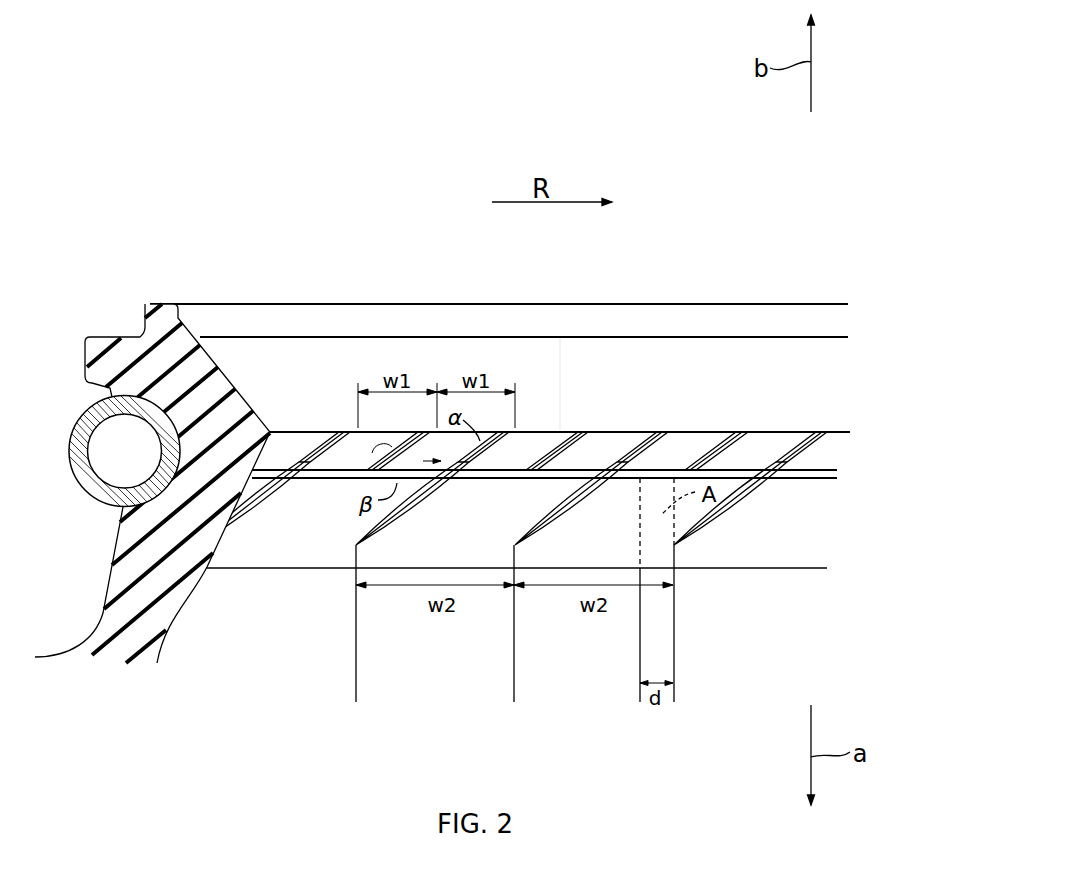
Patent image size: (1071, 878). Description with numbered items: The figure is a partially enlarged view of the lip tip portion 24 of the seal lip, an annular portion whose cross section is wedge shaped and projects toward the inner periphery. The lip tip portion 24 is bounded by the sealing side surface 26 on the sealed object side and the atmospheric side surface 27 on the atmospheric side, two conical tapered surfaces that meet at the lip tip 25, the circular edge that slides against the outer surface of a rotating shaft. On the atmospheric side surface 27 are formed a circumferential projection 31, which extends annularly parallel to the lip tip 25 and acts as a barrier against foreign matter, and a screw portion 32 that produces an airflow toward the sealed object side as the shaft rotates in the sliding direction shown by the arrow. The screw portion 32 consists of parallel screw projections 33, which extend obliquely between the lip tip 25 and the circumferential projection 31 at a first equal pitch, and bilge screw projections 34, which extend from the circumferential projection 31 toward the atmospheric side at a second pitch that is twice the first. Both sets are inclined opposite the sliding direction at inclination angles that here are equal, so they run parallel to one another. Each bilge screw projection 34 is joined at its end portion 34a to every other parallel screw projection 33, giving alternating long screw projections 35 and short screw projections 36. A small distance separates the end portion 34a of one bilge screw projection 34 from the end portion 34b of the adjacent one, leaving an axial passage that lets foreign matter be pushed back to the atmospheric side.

The lip tip portion 24 is at (553, 360).
The lip tip 25 is at (310, 430).
The sealing side surface 26 is at (415, 358).
The atmospheric side surface 27 is at (290, 572).
The circumferential projection 31 is at (659, 482).
The screw portion 32 is at (800, 421).
The parallel screw projection 33 is at (567, 428).
The bilge screw projection 34 is at (240, 521).
The end portion 34a is at (666, 446).
The end portion 34b is at (677, 548).
The long screw projection 35 is at (453, 655).
The short screw projection 36 is at (597, 448).